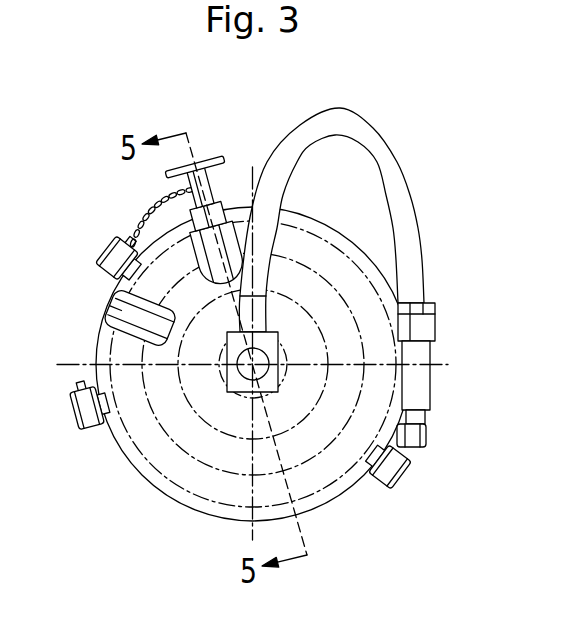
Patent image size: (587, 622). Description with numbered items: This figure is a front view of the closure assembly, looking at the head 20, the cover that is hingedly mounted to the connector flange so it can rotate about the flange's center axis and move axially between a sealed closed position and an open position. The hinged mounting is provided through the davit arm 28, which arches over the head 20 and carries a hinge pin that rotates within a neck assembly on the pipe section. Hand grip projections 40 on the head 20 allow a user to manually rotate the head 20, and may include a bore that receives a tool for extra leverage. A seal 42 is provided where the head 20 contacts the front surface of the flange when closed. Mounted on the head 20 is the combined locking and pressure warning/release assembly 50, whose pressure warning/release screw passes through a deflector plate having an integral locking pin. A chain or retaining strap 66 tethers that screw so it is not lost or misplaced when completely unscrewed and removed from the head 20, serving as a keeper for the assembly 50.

The head 20 is at (352, 344).
The davit arm 28 is at (414, 249).
The hand grip projections 40 is at (100, 251).
The seal 42 is at (401, 479).
The combined locking and pressure warning/release assembly 50 is at (232, 144).
The chain or retaining strap 66 is at (150, 211).